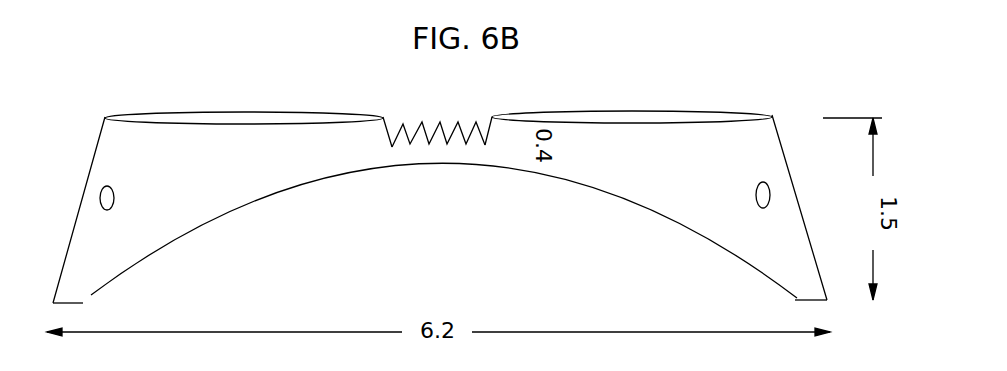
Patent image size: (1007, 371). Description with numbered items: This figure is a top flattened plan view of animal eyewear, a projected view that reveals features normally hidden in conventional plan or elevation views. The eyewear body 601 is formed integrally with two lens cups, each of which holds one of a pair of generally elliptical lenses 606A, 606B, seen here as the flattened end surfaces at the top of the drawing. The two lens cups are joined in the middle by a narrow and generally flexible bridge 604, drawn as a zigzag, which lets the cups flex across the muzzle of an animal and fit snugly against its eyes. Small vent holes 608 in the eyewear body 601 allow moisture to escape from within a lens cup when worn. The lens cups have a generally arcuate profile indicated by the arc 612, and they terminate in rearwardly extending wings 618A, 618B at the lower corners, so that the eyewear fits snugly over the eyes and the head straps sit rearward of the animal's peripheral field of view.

The eyewear body 601 is at (212, 186).
The bridge 604 is at (403, 125).
The lens 606A is at (252, 60).
The lens 606B is at (603, 115).
The vent hole 608 is at (113, 203).
The arc 612 is at (319, 181).
The rearwardly extending wing 618A is at (87, 271).
The rearwardly extending wing 618B is at (790, 265).